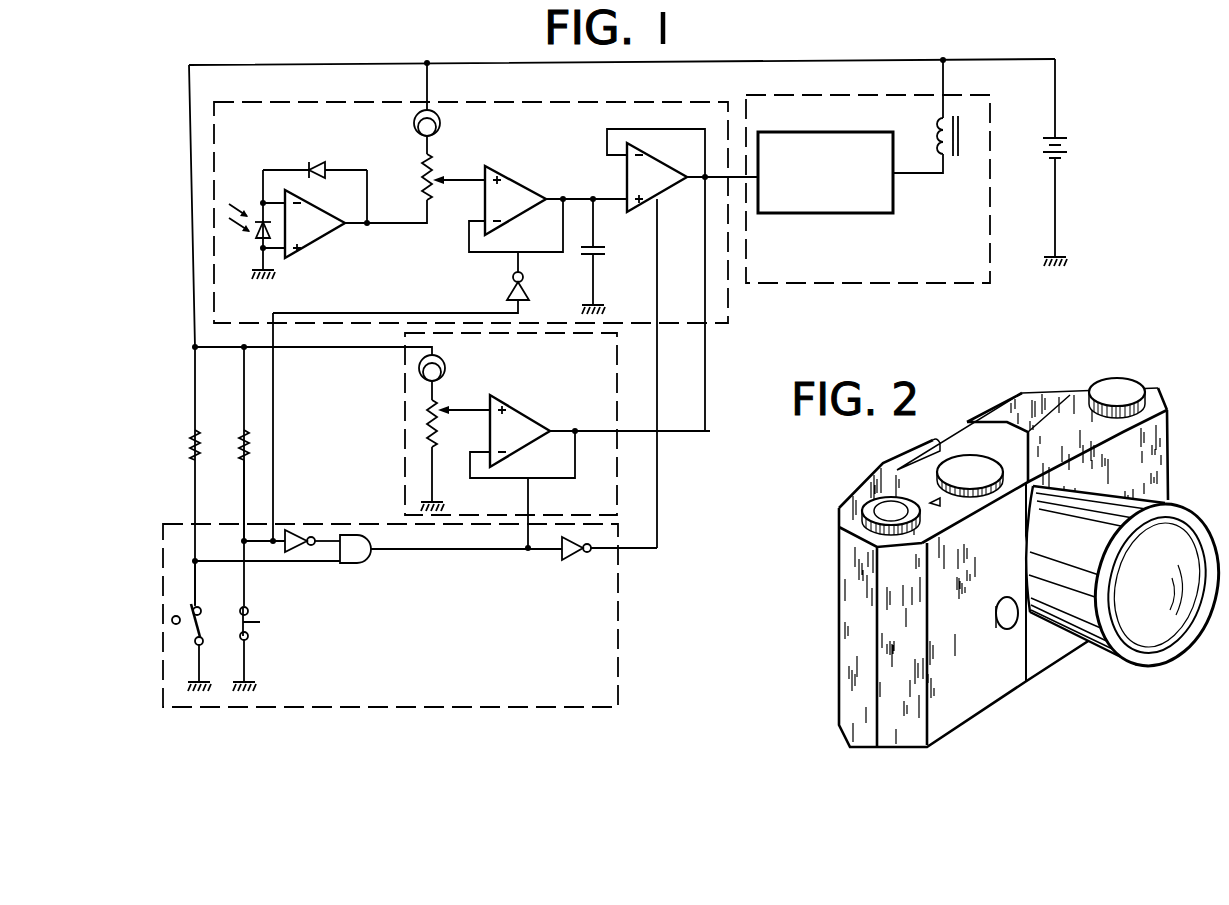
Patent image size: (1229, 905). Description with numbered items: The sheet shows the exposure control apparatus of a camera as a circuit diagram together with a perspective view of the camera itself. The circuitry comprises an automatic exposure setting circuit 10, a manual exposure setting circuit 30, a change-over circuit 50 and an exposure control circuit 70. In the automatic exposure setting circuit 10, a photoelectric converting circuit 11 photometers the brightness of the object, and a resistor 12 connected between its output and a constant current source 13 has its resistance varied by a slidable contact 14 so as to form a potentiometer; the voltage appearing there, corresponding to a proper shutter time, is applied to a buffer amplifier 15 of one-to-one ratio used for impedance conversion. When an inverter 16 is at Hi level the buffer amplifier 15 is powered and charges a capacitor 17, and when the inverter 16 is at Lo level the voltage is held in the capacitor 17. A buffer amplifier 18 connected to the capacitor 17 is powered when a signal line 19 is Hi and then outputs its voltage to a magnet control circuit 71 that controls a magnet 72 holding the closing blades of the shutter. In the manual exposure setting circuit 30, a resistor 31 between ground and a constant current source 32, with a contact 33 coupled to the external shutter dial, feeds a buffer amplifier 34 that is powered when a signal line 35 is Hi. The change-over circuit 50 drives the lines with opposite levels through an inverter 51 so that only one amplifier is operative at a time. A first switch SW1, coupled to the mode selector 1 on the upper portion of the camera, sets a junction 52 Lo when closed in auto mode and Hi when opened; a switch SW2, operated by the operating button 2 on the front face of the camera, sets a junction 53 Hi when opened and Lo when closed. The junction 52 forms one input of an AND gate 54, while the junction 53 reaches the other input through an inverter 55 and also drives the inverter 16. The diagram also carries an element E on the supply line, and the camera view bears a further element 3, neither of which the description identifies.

In FIG. 1, the automatic exposure setting circuit 10 is at (214, 140).
In FIG. 1, the photoelectric converting circuit 11 is at (330, 245).
In FIG. 1, the resistor 12 is at (422, 170).
In FIG. 1, the constant current source 13 is at (414, 118).
In FIG. 1, the slidable contact 14 is at (462, 177).
In FIG. 1, the buffer amplifier 15 is at (520, 178).
In FIG. 1, the inverter 16 is at (507, 292).
In FIG. 1, the capacitor 17 is at (607, 250).
In FIG. 1, the buffer amplifier 18 is at (668, 190).
In FIG. 1, the signal line 19 is at (657, 290).
In FIG. 1, the manual exposure setting circuit 30 is at (405, 445).
In FIG. 1, the resistor 31 is at (441, 428).
In FIG. 1, the constant current source 32 is at (447, 362).
In FIG. 1, the contact 33 is at (468, 408).
In FIG. 1, the buffer amplifier 34 is at (525, 415).
In FIG. 1, the signal line 35 is at (530, 492).
In FIG. 1, the change-over circuit 50 is at (163, 542).
In FIG. 1, the inverter 51 is at (572, 560).
In FIG. 1, the junction 52 is at (194, 562).
In FIG. 1, the junction 53 is at (243, 541).
In FIG. 1, the AND gate 54 is at (355, 565).
In FIG. 1, the inverter 55 is at (294, 530).
In FIG. 1, the exposure control circuit 70 is at (800, 283).
In FIG. 1, the magnet control circuit 71 is at (829, 213).
In FIG. 1, the magnet 72 is at (938, 135).
In FIG. 1, the battery E is at (1070, 145).
In FIG. 1, the first switch SW1 is at (200, 626).
In FIG. 1, the switch SW2 is at (254, 634).
In FIG. 2, the mode selector 1 is at (963, 462).
In FIG. 2, the operating button 2 is at (1008, 624).
In FIG. 2, the dial 3 is at (883, 512).